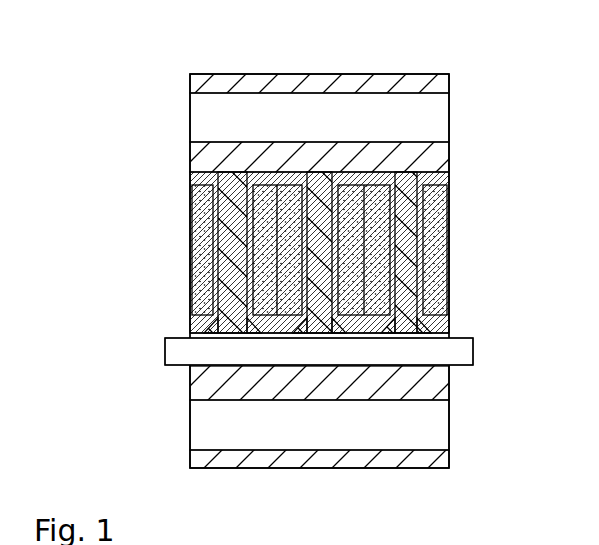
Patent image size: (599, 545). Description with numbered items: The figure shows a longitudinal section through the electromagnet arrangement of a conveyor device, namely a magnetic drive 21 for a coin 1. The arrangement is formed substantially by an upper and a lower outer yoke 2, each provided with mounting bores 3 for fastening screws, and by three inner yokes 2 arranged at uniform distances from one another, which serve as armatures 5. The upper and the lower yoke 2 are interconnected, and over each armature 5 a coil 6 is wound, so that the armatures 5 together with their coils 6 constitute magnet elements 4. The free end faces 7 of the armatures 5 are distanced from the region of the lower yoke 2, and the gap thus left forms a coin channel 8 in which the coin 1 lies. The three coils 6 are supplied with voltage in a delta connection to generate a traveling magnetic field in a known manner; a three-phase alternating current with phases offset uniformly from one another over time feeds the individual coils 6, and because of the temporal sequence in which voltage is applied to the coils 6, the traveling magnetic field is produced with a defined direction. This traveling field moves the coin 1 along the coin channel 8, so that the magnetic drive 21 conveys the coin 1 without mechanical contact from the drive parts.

The coin 1 is at (413, 345).
The yoke 2 is at (345, 72).
The mounting bores 3 is at (375, 108).
The magnet elements 4 is at (192, 62).
The armatures 5 is at (220, 262).
The coil 6 is at (212, 237).
The free end faces 7 is at (188, 343).
The coin channel 8 is at (469, 348).
The magnetic drive 21 is at (499, 63).